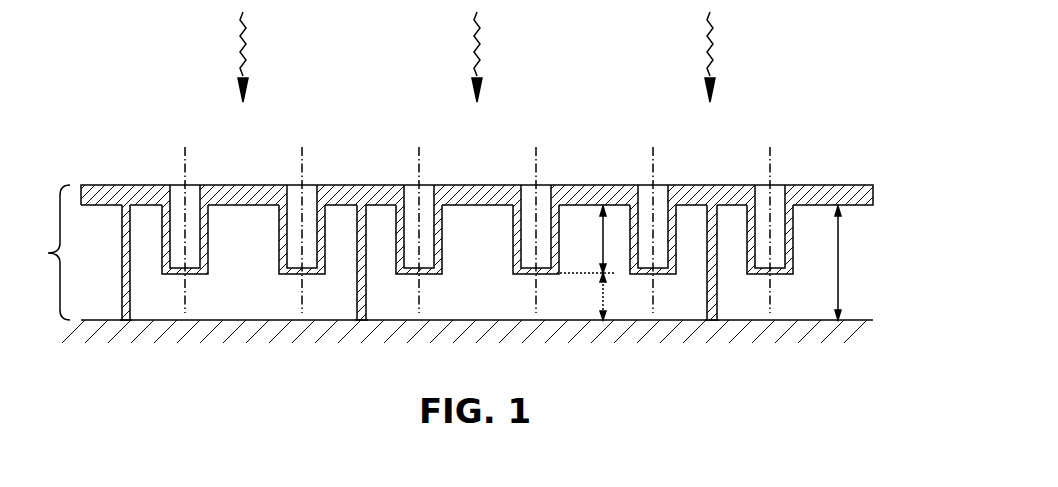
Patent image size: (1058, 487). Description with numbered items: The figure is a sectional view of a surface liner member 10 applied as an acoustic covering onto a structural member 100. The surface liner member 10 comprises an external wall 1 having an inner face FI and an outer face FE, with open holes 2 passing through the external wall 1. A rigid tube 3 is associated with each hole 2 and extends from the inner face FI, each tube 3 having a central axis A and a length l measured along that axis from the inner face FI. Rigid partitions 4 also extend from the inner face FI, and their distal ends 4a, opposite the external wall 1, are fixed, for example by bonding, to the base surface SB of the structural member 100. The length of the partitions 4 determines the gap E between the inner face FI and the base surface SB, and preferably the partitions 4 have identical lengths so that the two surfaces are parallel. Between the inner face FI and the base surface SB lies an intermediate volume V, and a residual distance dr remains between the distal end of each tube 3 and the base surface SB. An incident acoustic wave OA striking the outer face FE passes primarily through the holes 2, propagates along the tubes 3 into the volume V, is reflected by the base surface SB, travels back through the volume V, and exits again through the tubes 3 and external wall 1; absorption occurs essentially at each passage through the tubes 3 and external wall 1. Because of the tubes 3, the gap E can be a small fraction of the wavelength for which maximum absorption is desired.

The external wall 1 is at (123, 191).
The open holes 2 is at (177, 191).
The tube 3 is at (279, 236).
The partition 4 is at (122, 289).
The distal end of partition 4a is at (122, 321).
The surface liner member 10 is at (44, 252).
The structural member 100 is at (850, 320).
The central axis of tube A is at (423, 164).
The intermediate volume V is at (485, 286).
The gap E is at (840, 263).
The length of tube l is at (608, 239).
The residual distance dr is at (597, 296).
The outer face of external wall FE is at (250, 185).
The inner face of external wall FI is at (242, 216).
The base surface SB is at (278, 297).
The incident acoustic wave OA is at (714, 50).